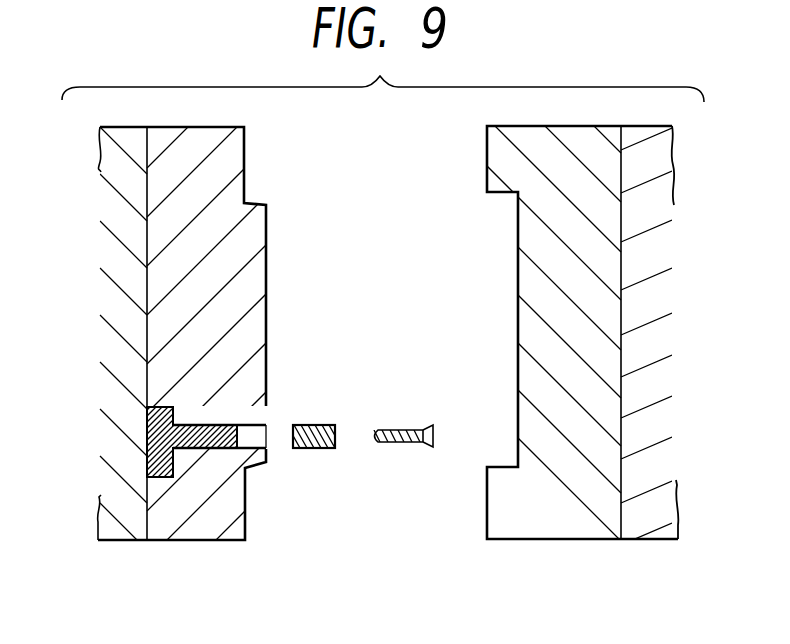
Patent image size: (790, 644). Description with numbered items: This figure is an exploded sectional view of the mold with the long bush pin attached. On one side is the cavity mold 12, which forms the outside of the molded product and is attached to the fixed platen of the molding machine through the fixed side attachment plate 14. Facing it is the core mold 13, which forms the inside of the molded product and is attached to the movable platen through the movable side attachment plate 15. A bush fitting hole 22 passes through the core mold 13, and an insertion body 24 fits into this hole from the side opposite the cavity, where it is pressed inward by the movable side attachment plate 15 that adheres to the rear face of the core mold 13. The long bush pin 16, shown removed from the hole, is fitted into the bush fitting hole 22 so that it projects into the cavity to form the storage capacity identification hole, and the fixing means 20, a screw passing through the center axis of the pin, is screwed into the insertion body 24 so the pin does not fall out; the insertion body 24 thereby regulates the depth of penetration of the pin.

The cavity mold 12 is at (538, 528).
The core mold 13 is at (200, 523).
The mold attachment plate (fixed side attachment plate) 14 is at (655, 520).
The mold attachment plate (movable side attachment plate) 15 is at (113, 527).
The long bush pin 16 is at (315, 423).
The fixing means 20 is at (398, 428).
The bush fitting hole 22 is at (253, 440).
The insertion body 24 is at (155, 458).